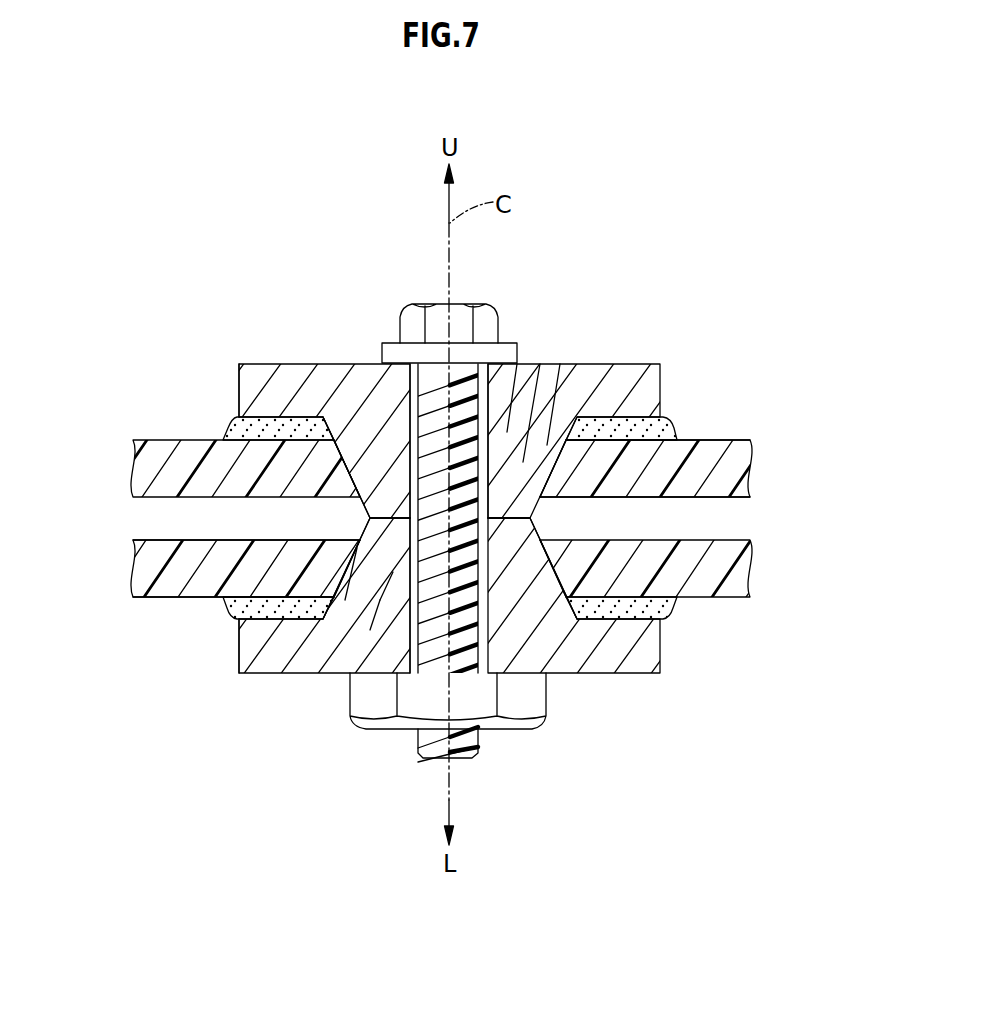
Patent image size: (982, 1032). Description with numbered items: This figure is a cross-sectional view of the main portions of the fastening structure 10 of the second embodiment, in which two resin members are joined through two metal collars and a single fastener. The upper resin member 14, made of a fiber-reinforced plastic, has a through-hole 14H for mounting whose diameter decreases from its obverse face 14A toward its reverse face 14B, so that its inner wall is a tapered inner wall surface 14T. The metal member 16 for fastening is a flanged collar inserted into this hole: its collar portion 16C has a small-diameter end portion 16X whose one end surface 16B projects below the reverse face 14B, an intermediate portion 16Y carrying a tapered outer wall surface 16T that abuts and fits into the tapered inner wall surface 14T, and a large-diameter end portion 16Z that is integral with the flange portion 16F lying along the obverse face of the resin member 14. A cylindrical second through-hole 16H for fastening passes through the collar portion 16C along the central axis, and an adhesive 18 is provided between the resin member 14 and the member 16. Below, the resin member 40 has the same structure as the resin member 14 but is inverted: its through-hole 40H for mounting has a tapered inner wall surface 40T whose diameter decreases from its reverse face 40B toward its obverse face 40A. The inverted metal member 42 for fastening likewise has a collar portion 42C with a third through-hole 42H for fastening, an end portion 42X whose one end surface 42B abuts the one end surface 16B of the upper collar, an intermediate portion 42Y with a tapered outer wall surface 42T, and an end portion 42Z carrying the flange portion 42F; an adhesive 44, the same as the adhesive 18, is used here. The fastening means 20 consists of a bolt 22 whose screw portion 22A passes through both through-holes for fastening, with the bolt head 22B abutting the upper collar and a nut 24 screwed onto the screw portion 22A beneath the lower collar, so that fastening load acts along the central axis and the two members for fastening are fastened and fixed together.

The fastening structure 10 is at (372, 313).
The resin member 14 is at (750, 440).
The obverse face 14A is at (706, 465).
The reverse face 14B is at (750, 497).
The tapered inner wall surface 14T is at (337, 442).
The through-hole for mounting 14H is at (553, 450).
The member for fastening 16 is at (312, 375).
The flange portion 16F is at (273, 382).
The tapered outer wall surface 16T is at (333, 455).
The collar portion 16C is at (370, 514).
The one end surface 16B is at (520, 522).
The second through-hole for fastening 16H is at (488, 383).
The end portion 16X is at (547, 445).
The intermediate portion 16Y is at (523, 462).
The end portion 16Z is at (507, 432).
The adhesive 18 is at (655, 430).
The fastening means 20 is at (556, 755).
The bolt 22 is at (477, 757).
The screw portion 22A is at (420, 752).
The bolt head 22B is at (460, 315).
The nut 24 is at (487, 707).
The resin member 40 is at (197, 580).
The obverse face 40A is at (160, 538).
The reverse face 40B is at (152, 603).
The through-hole for mounting 40H is at (297, 665).
The tapered inner wall surface 40T is at (556, 586).
The member for fastening 42 is at (293, 673).
The one end surface 42B is at (528, 518).
The collar portion 42C is at (355, 550).
The flange portion 42F is at (257, 650).
The third through-hole for fastening 42H is at (418, 650).
The tapered outer wall surface 42T is at (562, 578).
The end portion 42X is at (357, 548).
The intermediate portion 42Y is at (393, 572).
The end portion 42Z is at (380, 600).
The adhesive 44 is at (640, 612).